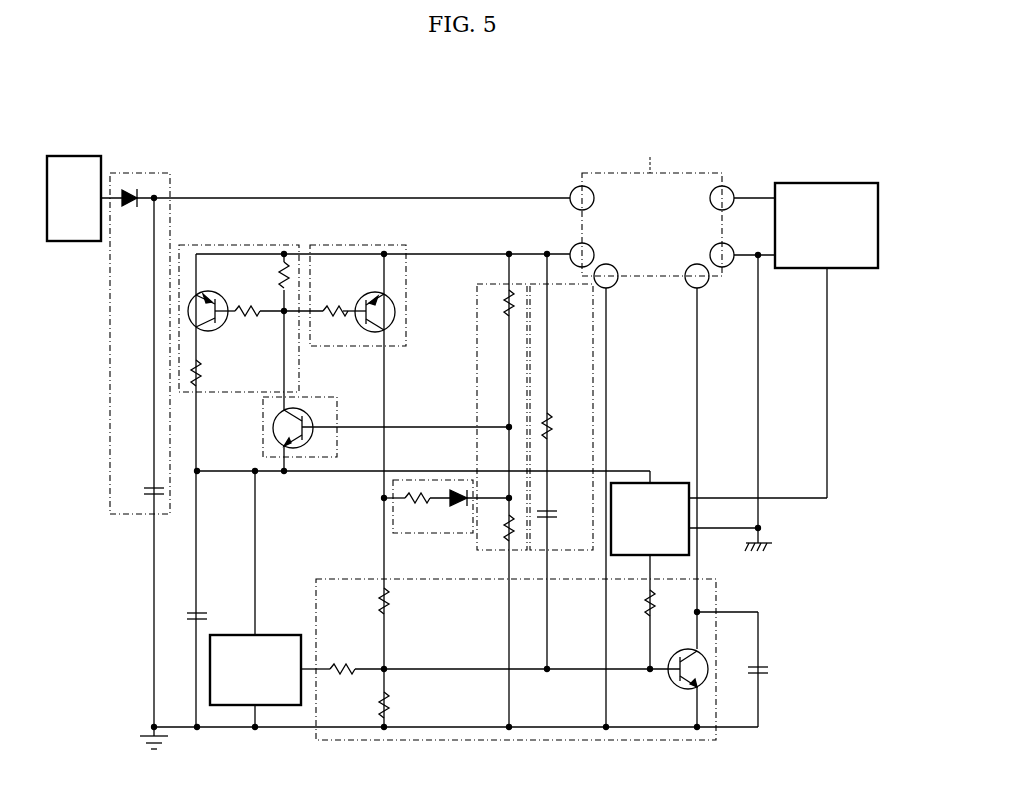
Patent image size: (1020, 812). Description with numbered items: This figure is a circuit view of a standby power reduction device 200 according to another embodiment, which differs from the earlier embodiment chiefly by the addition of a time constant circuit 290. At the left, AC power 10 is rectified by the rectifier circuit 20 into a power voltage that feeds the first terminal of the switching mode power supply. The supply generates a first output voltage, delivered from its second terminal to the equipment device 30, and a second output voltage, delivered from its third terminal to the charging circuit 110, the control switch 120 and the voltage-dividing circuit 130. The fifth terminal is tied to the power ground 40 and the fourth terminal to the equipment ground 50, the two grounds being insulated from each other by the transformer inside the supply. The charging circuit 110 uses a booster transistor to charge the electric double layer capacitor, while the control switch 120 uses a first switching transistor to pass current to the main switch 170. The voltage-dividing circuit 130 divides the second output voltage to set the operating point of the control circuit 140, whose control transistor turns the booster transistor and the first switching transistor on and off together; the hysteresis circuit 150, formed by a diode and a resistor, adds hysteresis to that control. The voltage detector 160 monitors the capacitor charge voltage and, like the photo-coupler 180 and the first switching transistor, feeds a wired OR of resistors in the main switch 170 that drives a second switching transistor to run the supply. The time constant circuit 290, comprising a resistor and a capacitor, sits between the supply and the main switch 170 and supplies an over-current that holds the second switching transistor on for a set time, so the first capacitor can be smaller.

The standby power reduction device 200 is at (68, 95).
The AC power 10 is at (72, 156).
The rectifier circuit 20 is at (140, 173).
The equipment device 30 is at (826, 183).
The power ground 40 is at (140, 738).
The equipment ground 50 is at (776, 548).
The charging circuit 110 is at (236, 245).
The control switch 120 is at (360, 245).
The voltage-dividing circuit 130 is at (477, 316).
The control circuit 140 is at (322, 397).
The hysteresis circuit 150 is at (434, 533).
The voltage detector 160 is at (228, 635).
The main switch 170 is at (495, 740).
The photo-coupler 180 is at (665, 483).
The time constant circuit 290 is at (593, 316).